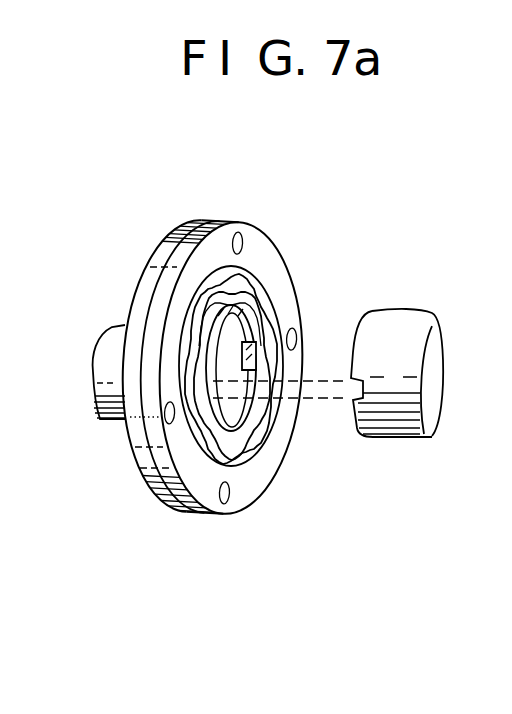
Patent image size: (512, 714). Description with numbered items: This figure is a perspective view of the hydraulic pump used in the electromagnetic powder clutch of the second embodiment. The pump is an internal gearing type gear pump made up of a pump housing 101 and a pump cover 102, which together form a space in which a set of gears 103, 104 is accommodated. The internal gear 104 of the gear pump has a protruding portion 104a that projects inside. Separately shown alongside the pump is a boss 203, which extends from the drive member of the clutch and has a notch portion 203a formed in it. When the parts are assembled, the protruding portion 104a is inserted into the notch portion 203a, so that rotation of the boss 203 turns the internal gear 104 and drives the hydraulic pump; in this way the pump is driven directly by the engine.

The pump housing 101 is at (193, 222).
The pump cover 102 is at (151, 257).
The gear 103 is at (245, 277).
The internal gear 104 is at (258, 312).
The protruding portion 104a is at (258, 353).
The boss 203 is at (412, 321).
The notch portion 203a is at (367, 403).